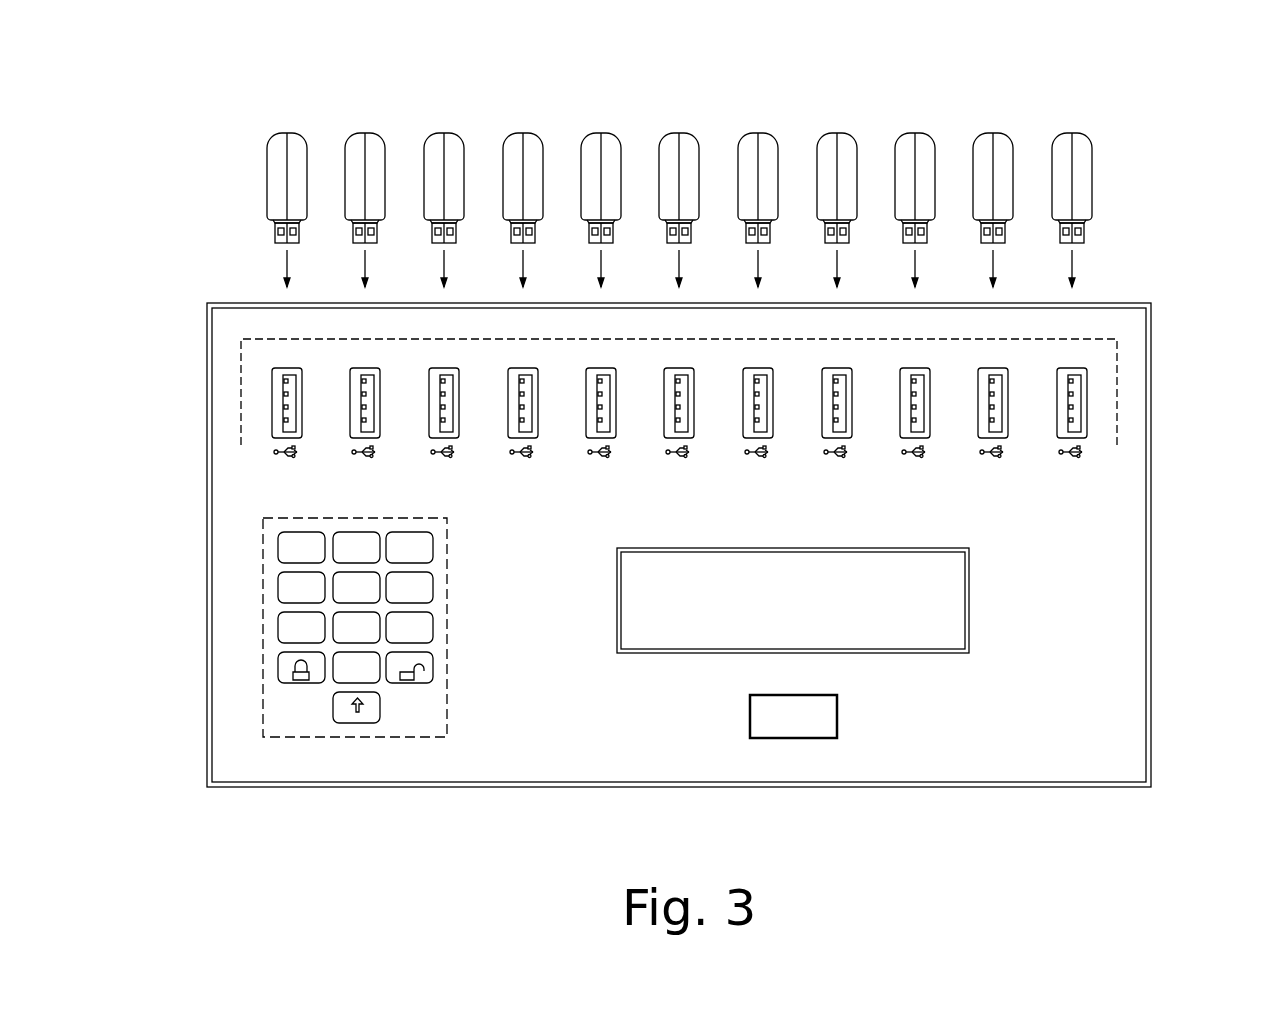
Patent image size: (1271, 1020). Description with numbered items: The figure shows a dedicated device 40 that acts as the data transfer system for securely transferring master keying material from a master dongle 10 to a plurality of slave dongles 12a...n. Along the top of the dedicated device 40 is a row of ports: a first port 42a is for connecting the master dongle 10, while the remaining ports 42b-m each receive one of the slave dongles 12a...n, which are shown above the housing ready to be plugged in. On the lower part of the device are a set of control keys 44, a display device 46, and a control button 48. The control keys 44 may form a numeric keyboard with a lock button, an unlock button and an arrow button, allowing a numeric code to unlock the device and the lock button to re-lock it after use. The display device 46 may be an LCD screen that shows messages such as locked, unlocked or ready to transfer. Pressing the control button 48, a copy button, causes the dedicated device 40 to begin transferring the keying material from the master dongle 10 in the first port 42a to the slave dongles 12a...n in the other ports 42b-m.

The master dongle 10 is at (287, 120).
The slave dongles 12a...n is at (523, 120).
The dedicated device 40 is at (1154, 546).
The first port 42a is at (257, 405).
The remaining ports 42b-m is at (601, 473).
The control keys 44 is at (355, 627).
The display device 46 is at (947, 653).
The control button 48 is at (793, 739).